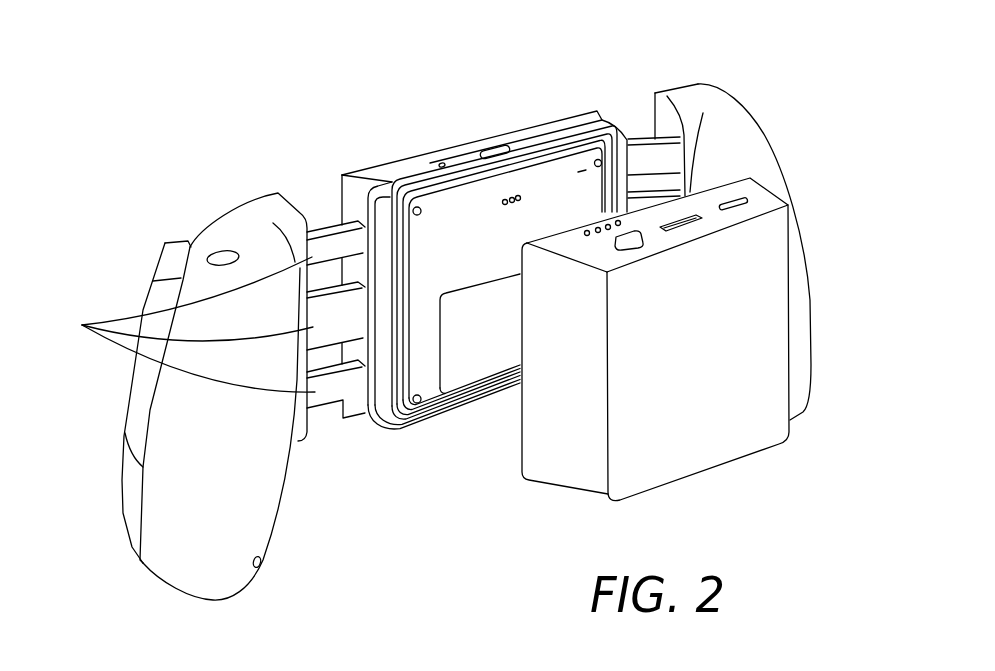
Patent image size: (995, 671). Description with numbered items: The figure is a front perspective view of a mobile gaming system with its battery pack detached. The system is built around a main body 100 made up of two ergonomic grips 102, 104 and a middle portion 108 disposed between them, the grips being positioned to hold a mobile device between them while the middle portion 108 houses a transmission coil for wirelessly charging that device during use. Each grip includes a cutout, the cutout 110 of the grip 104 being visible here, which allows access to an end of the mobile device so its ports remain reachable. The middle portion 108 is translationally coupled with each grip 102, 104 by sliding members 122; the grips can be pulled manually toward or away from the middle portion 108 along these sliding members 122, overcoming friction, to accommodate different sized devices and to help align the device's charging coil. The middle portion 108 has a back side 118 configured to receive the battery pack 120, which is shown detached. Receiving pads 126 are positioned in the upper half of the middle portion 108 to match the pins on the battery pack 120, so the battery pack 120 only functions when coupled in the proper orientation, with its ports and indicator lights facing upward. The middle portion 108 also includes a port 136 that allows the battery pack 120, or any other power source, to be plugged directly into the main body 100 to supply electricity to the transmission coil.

The main body 100 is at (448, 320).
The ergonomic grip 102 is at (758, 139).
The ergonomic grip 104 is at (158, 562).
The middle portion 108 is at (368, 155).
The cutout 110 is at (137, 418).
The back side 118 is at (586, 181).
The battery pack 120 is at (770, 439).
The sliding members 122 is at (201, 319).
The receiving pads 126 is at (503, 202).
The port 136 is at (497, 150).